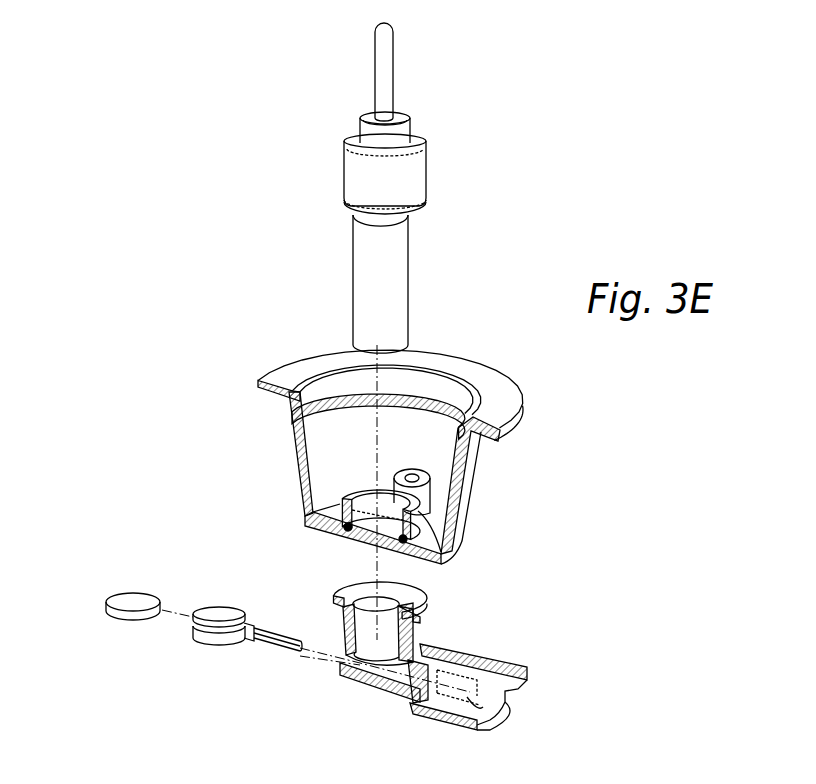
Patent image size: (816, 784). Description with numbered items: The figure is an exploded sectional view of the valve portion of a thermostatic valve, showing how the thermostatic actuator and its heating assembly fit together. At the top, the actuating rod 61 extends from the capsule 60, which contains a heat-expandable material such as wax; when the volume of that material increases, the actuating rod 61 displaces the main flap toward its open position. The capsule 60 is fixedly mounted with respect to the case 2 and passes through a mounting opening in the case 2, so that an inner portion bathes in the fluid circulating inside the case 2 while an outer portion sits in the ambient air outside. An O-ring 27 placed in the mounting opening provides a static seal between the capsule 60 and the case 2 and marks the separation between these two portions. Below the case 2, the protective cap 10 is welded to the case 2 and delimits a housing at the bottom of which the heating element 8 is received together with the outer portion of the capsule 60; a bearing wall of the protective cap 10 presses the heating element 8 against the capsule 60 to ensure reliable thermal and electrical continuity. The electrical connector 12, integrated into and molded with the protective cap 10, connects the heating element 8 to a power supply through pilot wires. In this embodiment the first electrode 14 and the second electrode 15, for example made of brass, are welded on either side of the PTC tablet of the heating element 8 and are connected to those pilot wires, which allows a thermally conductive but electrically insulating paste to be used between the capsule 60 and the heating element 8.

The actuating rod 61 is at (387, 68).
The capsule 60 is at (388, 275).
The case 2 is at (394, 463).
The O-ring 27 is at (348, 533).
The protective cap 10 is at (413, 632).
The electrical connector 12 is at (490, 660).
The heating element 8 is at (131, 598).
The second electrode 15 is at (219, 618).
The first electrode 14 is at (209, 646).